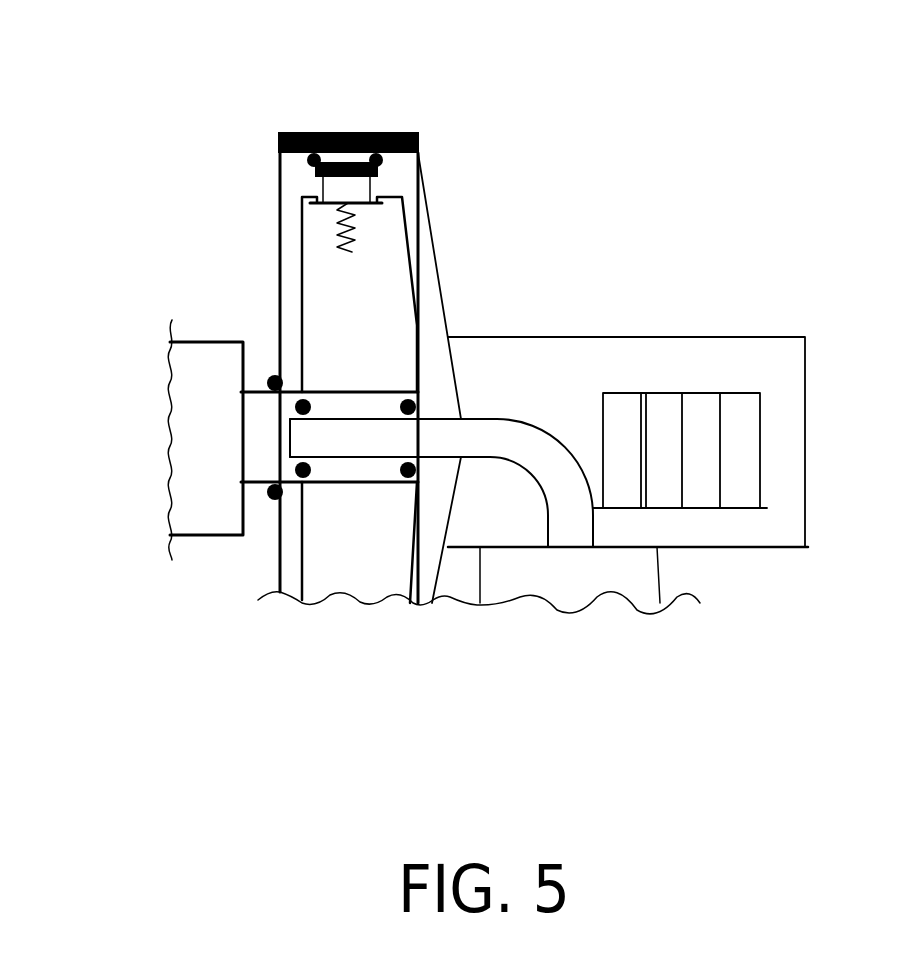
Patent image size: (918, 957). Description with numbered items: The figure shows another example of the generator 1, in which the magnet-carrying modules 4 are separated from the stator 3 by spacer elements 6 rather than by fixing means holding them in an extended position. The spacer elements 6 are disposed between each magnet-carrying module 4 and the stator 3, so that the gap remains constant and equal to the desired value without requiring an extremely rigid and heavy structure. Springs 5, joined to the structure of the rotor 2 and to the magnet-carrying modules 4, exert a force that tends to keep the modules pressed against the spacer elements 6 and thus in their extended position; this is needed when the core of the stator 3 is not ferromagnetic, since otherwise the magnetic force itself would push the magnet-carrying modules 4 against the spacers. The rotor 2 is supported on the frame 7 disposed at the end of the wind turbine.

The generator 1 is at (195, 123).
The rotor 2 is at (410, 287).
The stator 3 is at (422, 172).
The magnet-carrying module 4 is at (313, 168).
The spring 5 is at (343, 237).
The spacer element 6 is at (368, 132).
The frame 7 is at (528, 445).